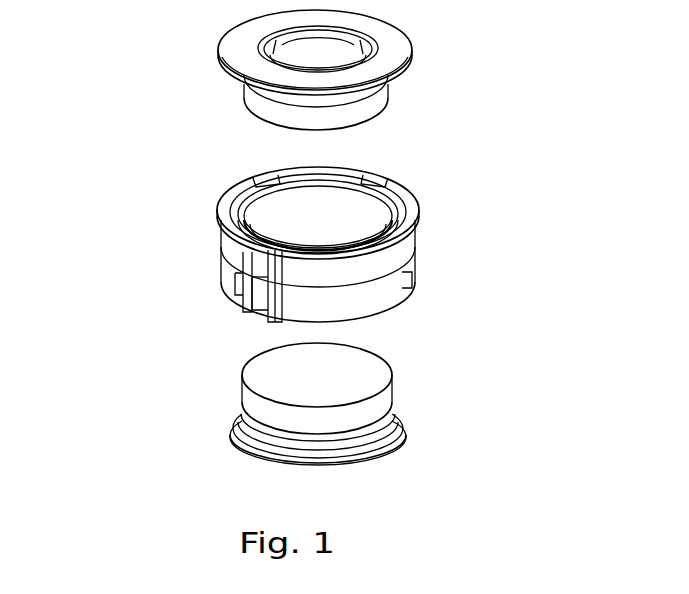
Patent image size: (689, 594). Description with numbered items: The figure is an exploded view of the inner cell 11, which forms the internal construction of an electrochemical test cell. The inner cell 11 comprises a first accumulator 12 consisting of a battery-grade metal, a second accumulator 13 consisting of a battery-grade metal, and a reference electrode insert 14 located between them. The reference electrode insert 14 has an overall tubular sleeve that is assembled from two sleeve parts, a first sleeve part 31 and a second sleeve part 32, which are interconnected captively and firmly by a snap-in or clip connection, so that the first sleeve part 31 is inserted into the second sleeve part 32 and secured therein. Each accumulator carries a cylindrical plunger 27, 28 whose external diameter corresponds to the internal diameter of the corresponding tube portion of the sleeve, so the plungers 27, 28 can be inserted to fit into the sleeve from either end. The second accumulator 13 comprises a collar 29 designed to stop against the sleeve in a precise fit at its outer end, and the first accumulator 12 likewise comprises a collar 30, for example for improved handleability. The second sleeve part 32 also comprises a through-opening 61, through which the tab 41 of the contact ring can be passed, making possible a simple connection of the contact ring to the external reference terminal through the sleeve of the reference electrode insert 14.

The inner cell 11 is at (272, 260).
The first accumulator 12 is at (323, 70).
The second accumulator 13 is at (316, 404).
The reference electrode insert 14 is at (208, 275).
The cylindrical plunger 27 is at (388, 86).
The cylindrical plunger 28 is at (395, 408).
The collar 29 is at (233, 415).
The collar 30 is at (398, 52).
The first sleeve part 31 is at (415, 198).
The second sleeve part 32 is at (403, 238).
The tab 41 is at (238, 296).
The through-opening 61 is at (243, 254).